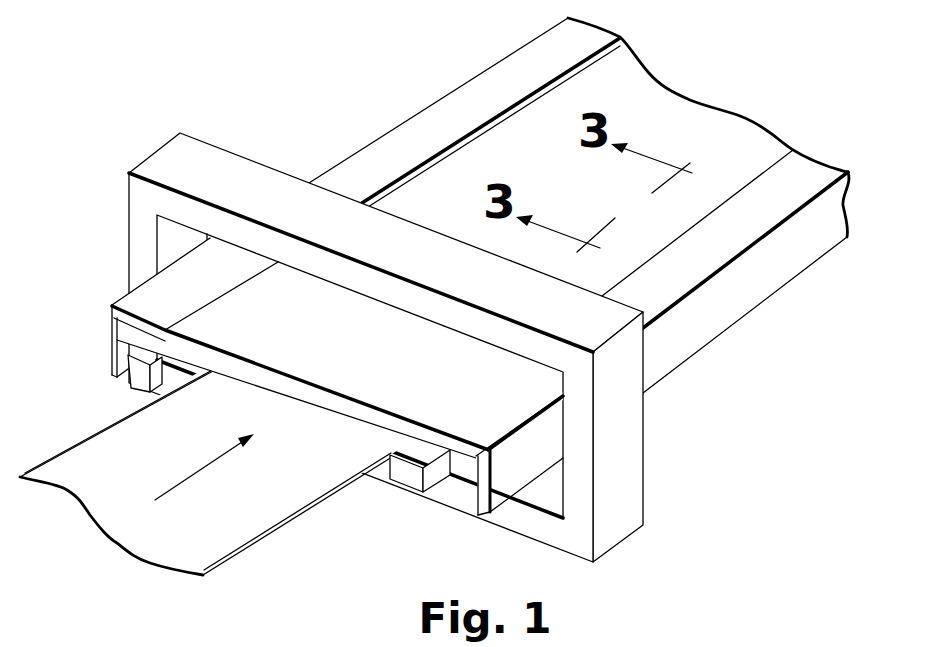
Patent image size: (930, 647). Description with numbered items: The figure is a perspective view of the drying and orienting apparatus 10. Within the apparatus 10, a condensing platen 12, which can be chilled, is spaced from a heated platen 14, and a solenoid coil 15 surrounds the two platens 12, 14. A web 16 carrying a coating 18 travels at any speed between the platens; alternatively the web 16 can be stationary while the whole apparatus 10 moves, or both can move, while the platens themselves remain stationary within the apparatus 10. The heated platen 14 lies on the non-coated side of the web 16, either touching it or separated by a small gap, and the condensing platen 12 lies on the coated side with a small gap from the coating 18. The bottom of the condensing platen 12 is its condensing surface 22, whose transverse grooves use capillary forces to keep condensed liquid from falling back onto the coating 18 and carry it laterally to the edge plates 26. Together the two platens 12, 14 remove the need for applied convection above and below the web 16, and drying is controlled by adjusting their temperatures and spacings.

The apparatus 10 is at (140, 232).
The condensing platen 12 is at (370, 368).
The heated platen 14 is at (400, 486).
The solenoid coil 15 is at (438, 308).
The web 16 is at (221, 496).
The coating 18 is at (268, 537).
The condensing surface 22 is at (468, 473).
The edge plates 26 is at (538, 62).